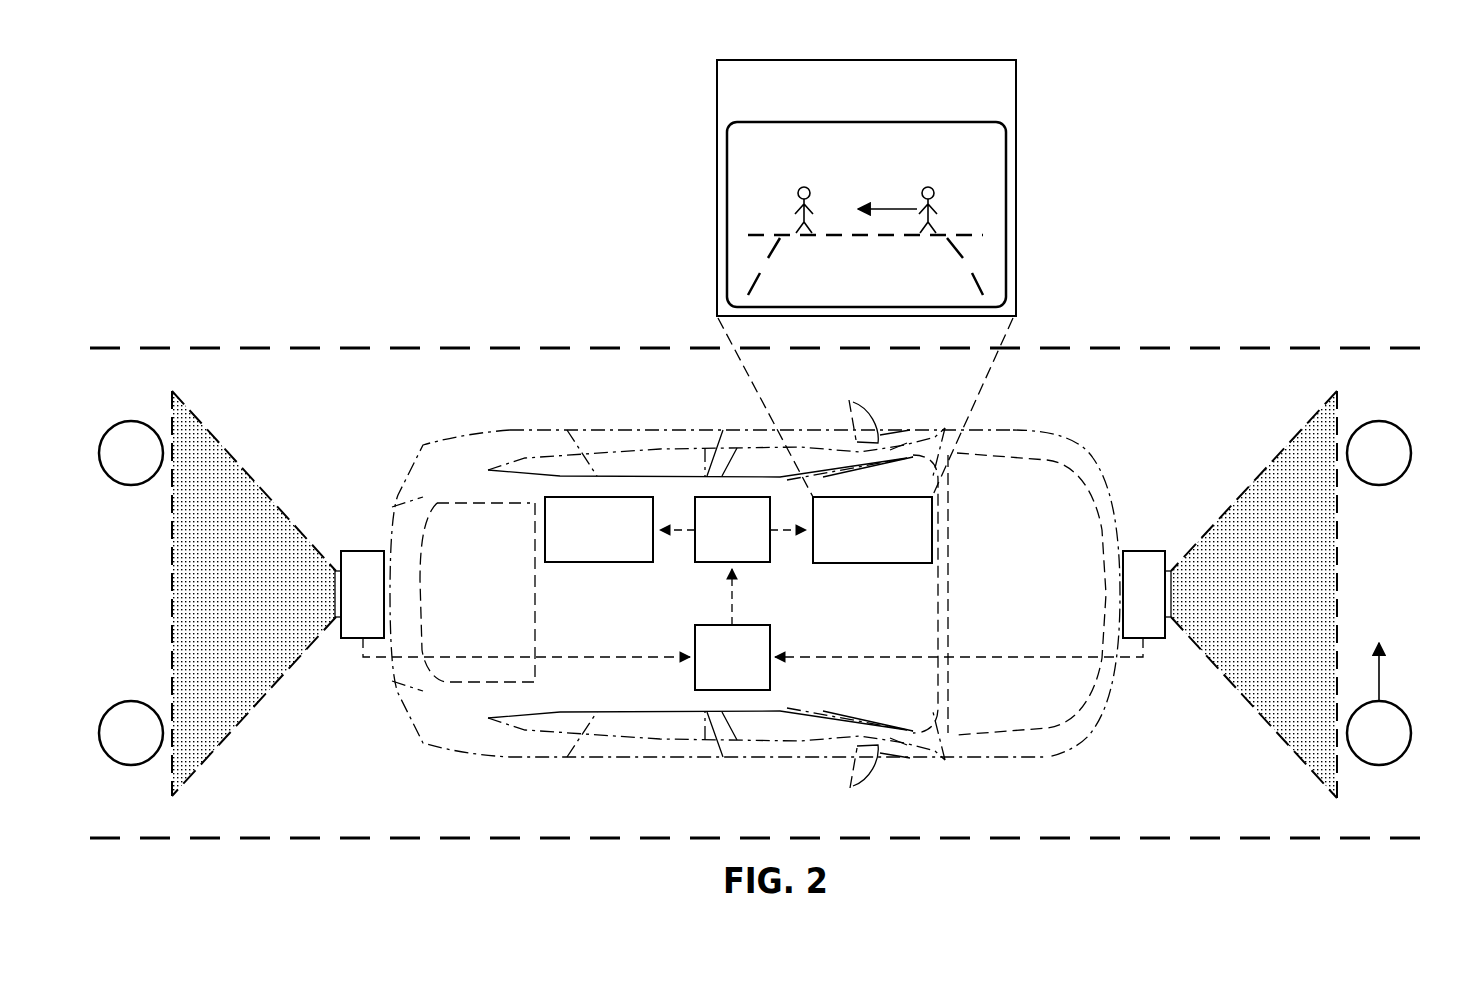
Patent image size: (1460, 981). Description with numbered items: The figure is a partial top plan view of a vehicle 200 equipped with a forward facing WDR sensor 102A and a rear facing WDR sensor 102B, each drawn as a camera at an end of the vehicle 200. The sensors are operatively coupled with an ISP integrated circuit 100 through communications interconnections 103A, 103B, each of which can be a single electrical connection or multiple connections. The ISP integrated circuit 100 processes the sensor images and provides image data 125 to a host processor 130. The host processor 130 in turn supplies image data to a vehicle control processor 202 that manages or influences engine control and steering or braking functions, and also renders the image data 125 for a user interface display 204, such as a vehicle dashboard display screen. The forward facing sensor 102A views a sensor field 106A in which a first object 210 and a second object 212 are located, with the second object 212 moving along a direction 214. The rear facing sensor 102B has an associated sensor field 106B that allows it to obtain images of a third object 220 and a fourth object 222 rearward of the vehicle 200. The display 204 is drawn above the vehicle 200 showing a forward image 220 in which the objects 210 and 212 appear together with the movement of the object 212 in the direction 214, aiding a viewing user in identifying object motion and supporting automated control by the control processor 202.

The ISP integrated circuit 100 is at (694, 667).
The front facing WDR sensor 102A is at (1150, 551).
The rear facing WDR sensor 102B is at (360, 551).
The communications interconnection 103A is at (1025, 657).
The communications interconnection 103B is at (487, 657).
The sensor field 106A is at (1240, 694).
The sensor field 106B is at (266, 694).
The image data 125 is at (731, 593).
The host processor 130 is at (752, 563).
The vehicle 200 is at (598, 430).
The vehicle control processor 202 is at (599, 562).
The user interface display 204 is at (873, 563).
The first object 210 is at (1376, 421).
The second object 212 is at (1392, 764).
The direction 214 is at (1381, 672).
The third object / forward image 220 is at (128, 421).
The fourth object 222 is at (128, 765).